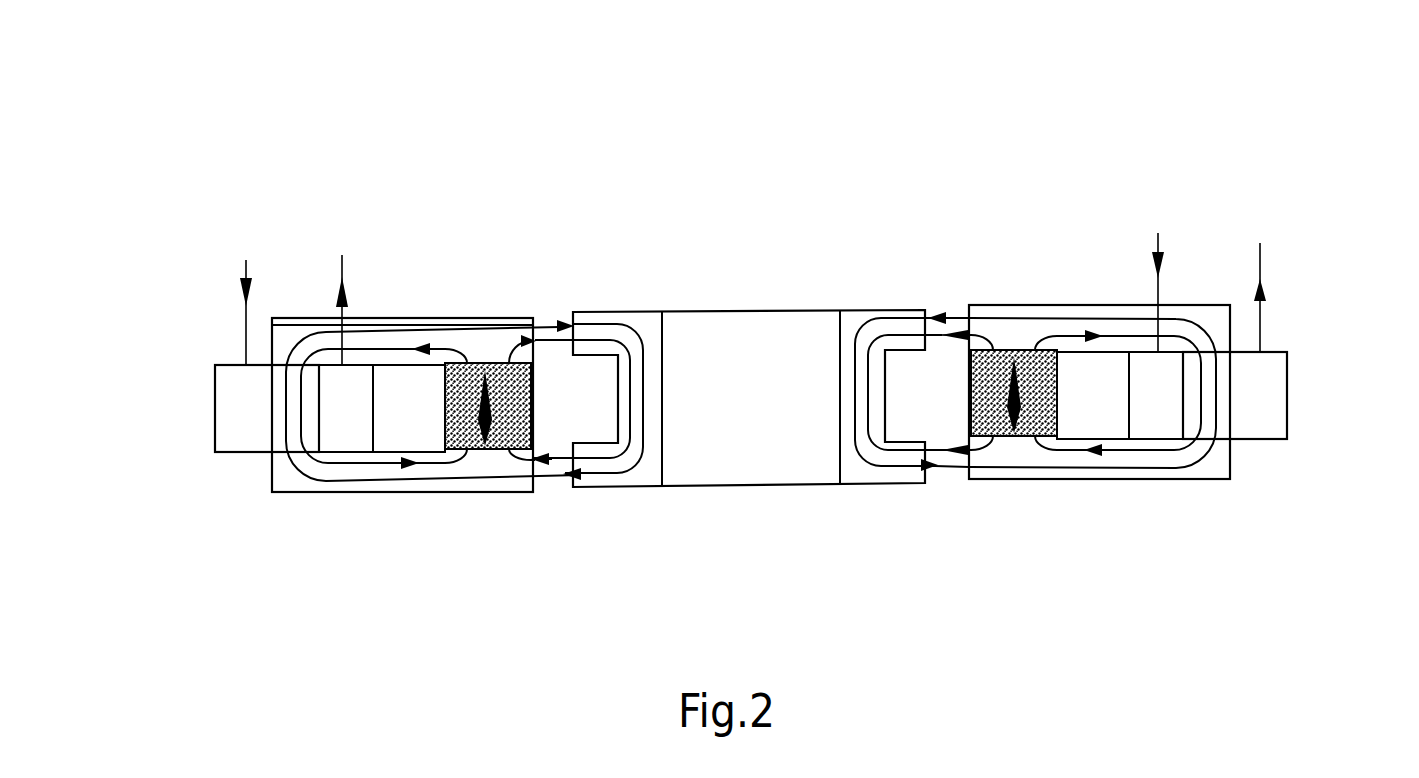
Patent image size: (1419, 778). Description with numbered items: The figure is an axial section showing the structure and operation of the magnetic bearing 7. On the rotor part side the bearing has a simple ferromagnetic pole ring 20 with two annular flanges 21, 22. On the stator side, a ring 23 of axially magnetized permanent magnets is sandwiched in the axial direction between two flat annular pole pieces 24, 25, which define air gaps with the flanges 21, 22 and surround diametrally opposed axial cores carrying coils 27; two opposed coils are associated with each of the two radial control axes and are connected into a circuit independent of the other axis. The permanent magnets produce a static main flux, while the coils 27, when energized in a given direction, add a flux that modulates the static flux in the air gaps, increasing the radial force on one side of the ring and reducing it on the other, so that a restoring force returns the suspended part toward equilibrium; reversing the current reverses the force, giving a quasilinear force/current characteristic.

The magnetic bearing 7 is at (992, 170).
The ferromagnetic pole ring 20 is at (612, 311).
The annular flange 21 is at (572, 488).
The annular flange 22 is at (553, 320).
The ring of axially magnetized permanent magnets 23 is at (445, 412).
The flat annular pole piece 24 is at (439, 318).
The flat annular pole piece 25 is at (430, 495).
The coil 27 is at (215, 409).